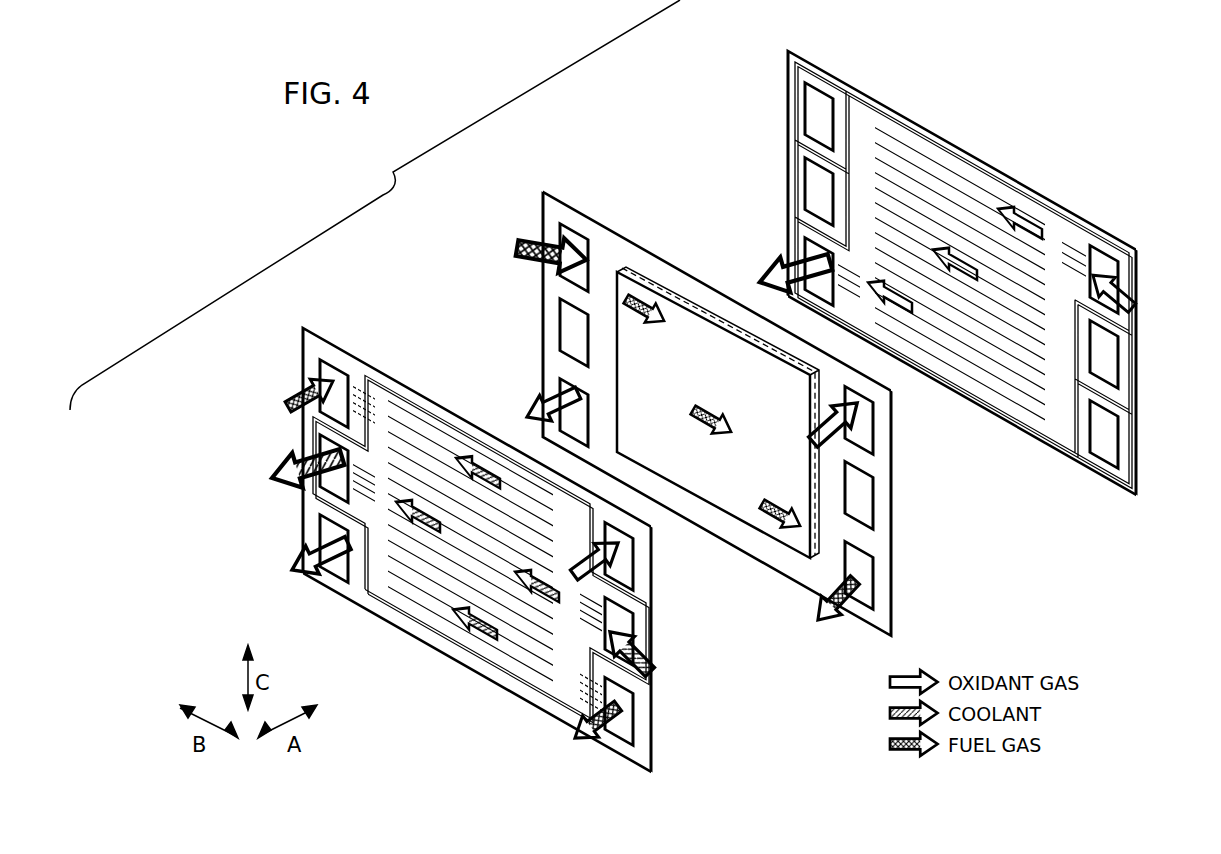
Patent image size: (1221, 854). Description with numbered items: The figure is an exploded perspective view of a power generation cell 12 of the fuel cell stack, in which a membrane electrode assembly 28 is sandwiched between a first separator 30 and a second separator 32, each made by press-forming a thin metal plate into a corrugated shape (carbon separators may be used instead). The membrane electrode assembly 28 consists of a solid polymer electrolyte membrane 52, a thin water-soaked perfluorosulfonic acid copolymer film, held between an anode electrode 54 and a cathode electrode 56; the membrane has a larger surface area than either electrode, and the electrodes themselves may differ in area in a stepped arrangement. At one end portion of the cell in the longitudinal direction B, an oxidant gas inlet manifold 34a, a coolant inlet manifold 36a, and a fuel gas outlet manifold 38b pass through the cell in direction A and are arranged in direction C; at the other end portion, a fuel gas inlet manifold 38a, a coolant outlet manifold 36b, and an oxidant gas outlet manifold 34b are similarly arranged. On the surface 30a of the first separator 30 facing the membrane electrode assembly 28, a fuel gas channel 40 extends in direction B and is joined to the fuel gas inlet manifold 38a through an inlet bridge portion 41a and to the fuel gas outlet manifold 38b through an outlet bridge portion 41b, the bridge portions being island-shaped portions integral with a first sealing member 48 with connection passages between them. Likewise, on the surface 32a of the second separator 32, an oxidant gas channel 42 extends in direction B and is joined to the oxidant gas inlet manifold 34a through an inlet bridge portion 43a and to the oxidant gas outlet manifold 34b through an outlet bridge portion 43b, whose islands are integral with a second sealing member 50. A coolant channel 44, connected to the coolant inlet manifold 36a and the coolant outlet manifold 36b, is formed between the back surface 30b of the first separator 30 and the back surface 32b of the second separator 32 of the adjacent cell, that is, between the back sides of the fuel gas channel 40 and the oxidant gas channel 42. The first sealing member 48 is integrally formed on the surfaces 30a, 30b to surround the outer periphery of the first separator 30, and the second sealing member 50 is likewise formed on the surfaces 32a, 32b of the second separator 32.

The power generation cell 12 is at (462, 116).
The membrane electrode assembly 28 is at (541, 205).
The first separator 30 is at (302, 330).
The surface of the first separator 30a is at (645, 737).
The surface of the first separator 30b is at (645, 765).
The second separator 32 is at (786, 62).
The surface of the second separator 32a is at (1060, 390).
The surface of the second separator 32b is at (1062, 420).
The oxidant gas inlet manifold 34a is at (1100, 262).
The oxidant gas outlet manifold 34b is at (812, 248).
The coolant inlet manifold 36a is at (1105, 352).
The coolant outlet manifold 36b is at (818, 178).
The fuel gas inlet manifold 38a is at (816, 105).
The fuel gas outlet manifold 38b is at (1103, 430).
The fuel gas channel 40 is at (447, 438).
The inlet bridge portion 41a is at (373, 400).
The outlet bridge portion 41b is at (578, 704).
The oxidant gas channel 42 is at (953, 185).
The inlet bridge portion 43a is at (1073, 240).
The outlet bridge portion 43b is at (845, 303).
The coolant channel 44 is at (442, 598).
The first sealing member 48 is at (503, 445).
The second sealing member 50 is at (1010, 185).
The solid polymer electrolyte membrane 52 is at (615, 240).
The anode electrode 54 is at (678, 345).
The cathode electrode 56 is at (718, 312).